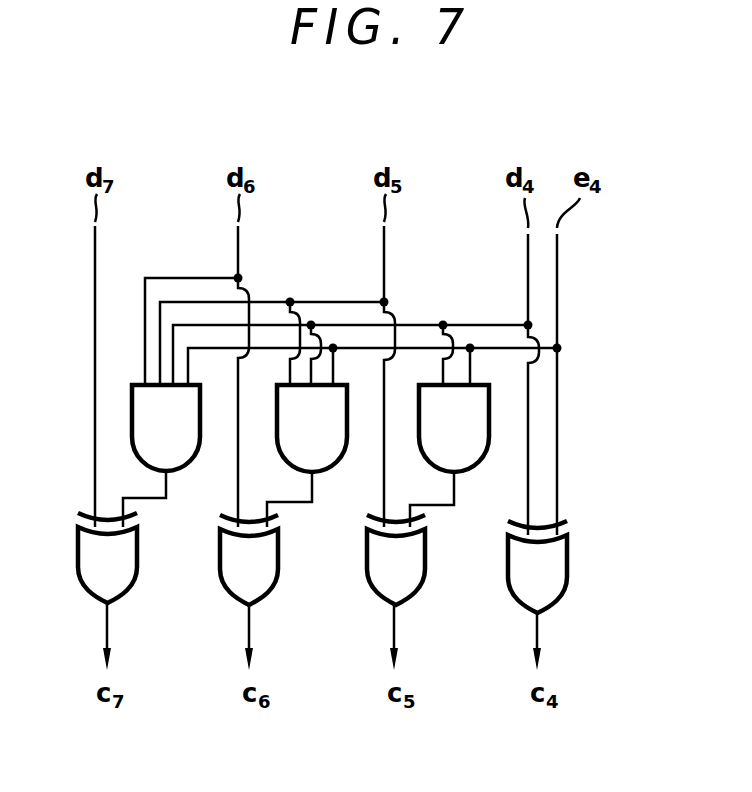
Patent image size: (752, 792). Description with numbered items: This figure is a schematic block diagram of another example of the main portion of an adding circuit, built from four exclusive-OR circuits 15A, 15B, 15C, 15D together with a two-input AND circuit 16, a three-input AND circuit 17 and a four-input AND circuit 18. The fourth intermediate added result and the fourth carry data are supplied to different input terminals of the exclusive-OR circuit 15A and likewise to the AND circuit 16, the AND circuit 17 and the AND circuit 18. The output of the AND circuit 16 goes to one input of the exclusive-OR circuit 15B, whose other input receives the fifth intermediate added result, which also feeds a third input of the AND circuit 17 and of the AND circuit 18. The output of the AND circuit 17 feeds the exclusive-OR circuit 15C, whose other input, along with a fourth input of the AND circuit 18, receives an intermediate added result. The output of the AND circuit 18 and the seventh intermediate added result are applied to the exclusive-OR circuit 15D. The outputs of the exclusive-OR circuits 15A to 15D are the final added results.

The exclusive-OR circuit 15A is at (568, 548).
The exclusive-OR circuit 15B is at (423, 580).
The exclusive-OR circuit 15C is at (276, 577).
The exclusive-OR circuit 15D is at (134, 574).
The 2-input AND circuit 16 is at (481, 462).
The 3-input AND circuit 17 is at (340, 462).
The 4-input AND circuit 18 is at (193, 461).